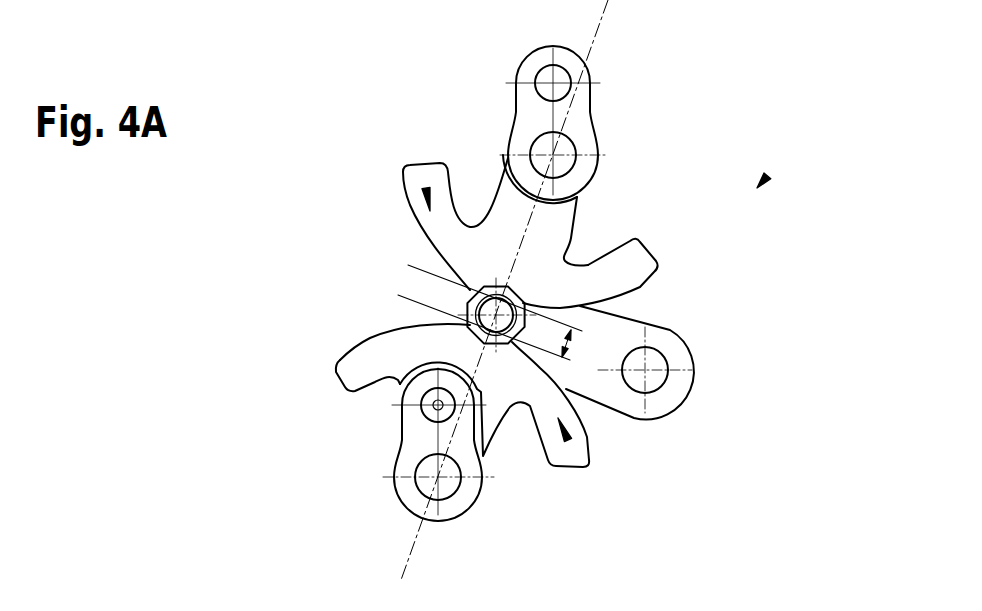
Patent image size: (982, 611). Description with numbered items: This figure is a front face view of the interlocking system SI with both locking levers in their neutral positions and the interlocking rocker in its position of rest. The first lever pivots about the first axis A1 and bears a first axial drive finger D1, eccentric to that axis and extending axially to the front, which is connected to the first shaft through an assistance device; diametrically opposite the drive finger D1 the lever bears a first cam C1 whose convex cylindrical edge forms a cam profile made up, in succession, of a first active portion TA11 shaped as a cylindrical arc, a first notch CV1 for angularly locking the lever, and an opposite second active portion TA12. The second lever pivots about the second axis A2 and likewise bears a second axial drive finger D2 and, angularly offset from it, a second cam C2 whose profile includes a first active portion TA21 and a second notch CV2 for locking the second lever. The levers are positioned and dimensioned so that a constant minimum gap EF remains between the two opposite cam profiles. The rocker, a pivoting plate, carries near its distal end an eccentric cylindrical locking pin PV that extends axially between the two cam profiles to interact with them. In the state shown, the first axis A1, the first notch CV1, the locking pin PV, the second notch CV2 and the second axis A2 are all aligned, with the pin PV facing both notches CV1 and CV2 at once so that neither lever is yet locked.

The first axial drive finger D1 is at (537, 70).
The first axis A1 is at (557, 155).
The first cam C1 is at (426, 190).
The interlocking system SI is at (768, 175).
The first active portion TA11 is at (407, 206).
The second active portion TA12 is at (640, 286).
The first notch CV1 is at (564, 242).
The locking pin PV is at (467, 300).
The second notch CV2 is at (452, 324).
The first active portion TA21 is at (352, 352).
The minimum gap EF is at (499, 313).
The second axial drive finger D2 is at (463, 395).
The second axis A2 is at (440, 479).
The second cam C2 is at (568, 440).